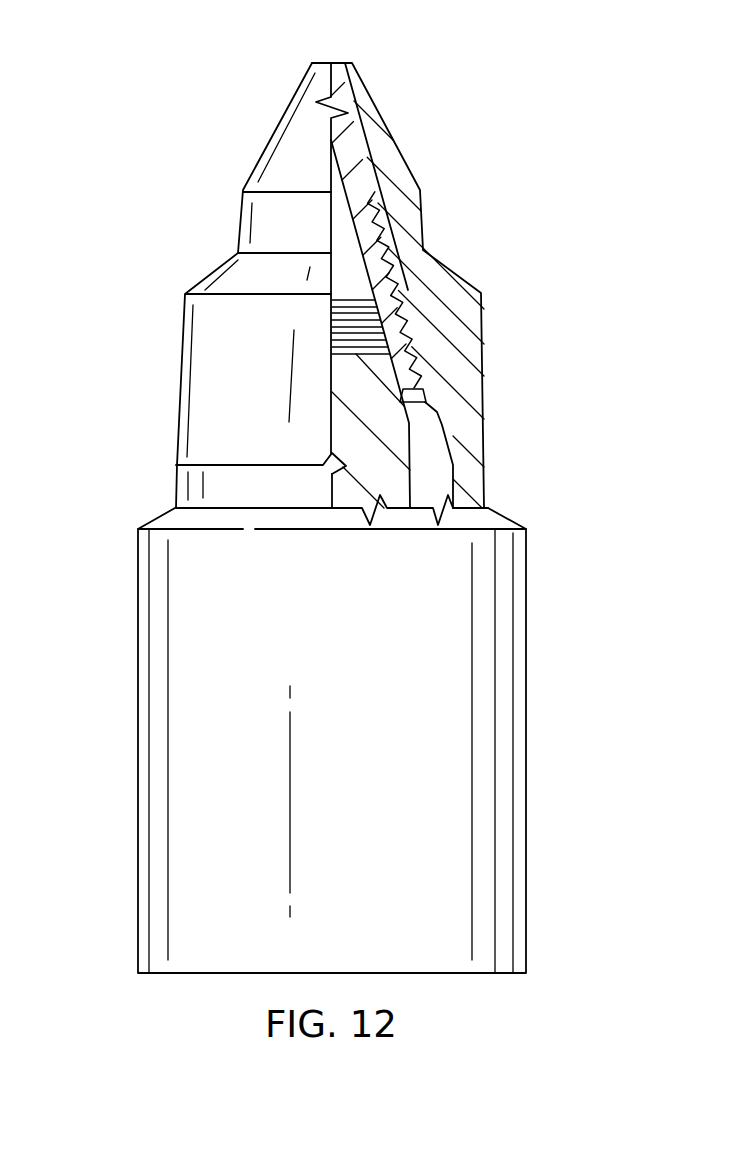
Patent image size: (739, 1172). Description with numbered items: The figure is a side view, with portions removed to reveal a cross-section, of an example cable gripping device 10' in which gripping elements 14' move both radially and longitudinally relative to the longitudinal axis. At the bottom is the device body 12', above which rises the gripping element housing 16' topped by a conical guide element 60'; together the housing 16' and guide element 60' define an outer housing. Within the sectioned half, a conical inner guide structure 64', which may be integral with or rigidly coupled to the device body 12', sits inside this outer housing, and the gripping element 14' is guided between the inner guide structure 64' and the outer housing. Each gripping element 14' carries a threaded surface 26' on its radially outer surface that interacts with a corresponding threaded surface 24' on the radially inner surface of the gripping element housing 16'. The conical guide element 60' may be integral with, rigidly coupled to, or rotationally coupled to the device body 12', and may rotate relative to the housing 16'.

The cable gripping device 10' is at (314, 495).
The device body 12' is at (300, 740).
The gripping element 14' is at (390, 285).
The gripping element housing 16' is at (302, 389).
The threaded surface 24' is at (452, 297).
The threaded surface 26' is at (413, 176).
The conical guide element 60' is at (352, 285).
The conical inner guide structure 64' is at (482, 453).